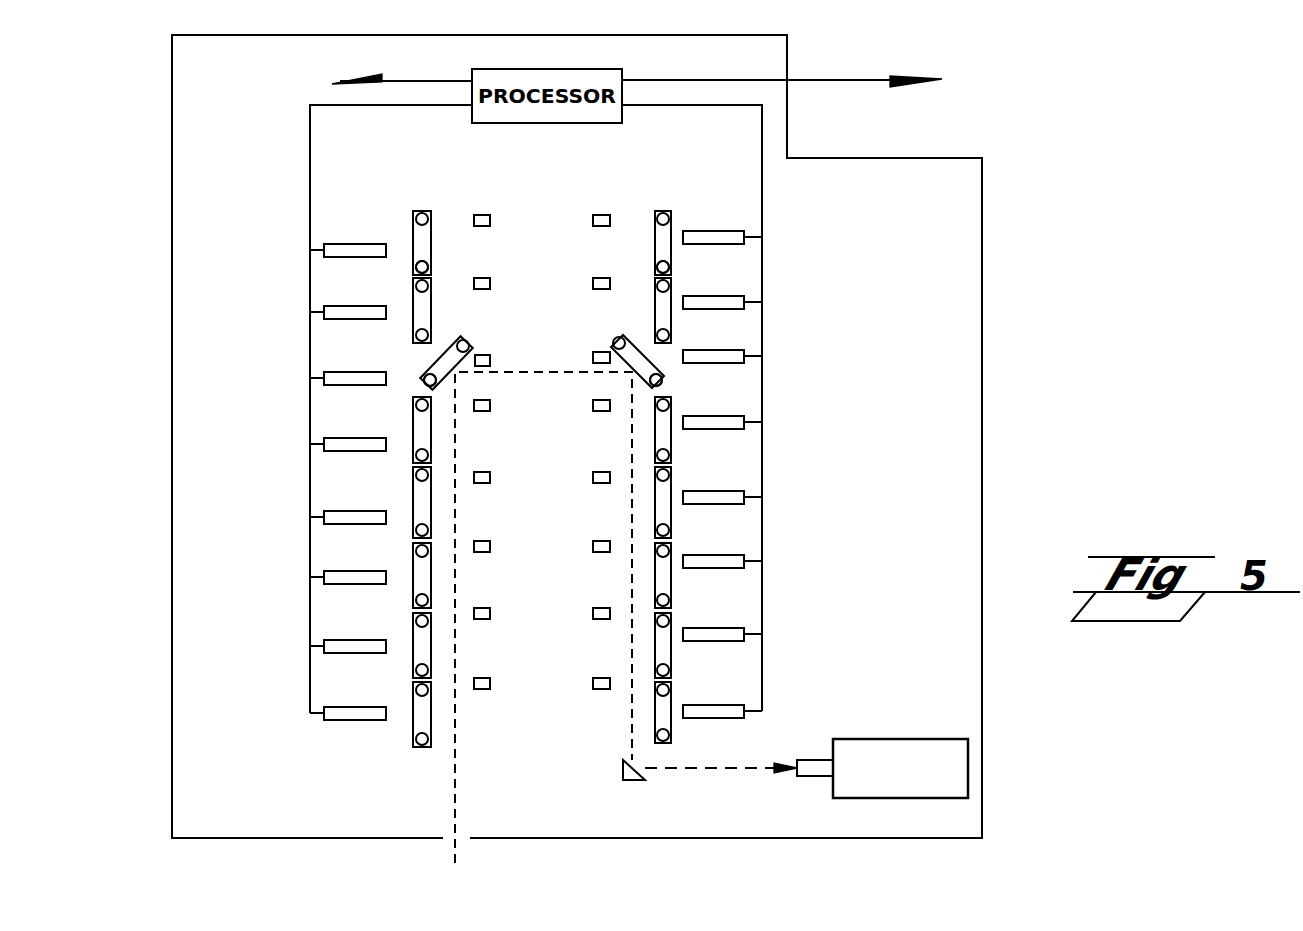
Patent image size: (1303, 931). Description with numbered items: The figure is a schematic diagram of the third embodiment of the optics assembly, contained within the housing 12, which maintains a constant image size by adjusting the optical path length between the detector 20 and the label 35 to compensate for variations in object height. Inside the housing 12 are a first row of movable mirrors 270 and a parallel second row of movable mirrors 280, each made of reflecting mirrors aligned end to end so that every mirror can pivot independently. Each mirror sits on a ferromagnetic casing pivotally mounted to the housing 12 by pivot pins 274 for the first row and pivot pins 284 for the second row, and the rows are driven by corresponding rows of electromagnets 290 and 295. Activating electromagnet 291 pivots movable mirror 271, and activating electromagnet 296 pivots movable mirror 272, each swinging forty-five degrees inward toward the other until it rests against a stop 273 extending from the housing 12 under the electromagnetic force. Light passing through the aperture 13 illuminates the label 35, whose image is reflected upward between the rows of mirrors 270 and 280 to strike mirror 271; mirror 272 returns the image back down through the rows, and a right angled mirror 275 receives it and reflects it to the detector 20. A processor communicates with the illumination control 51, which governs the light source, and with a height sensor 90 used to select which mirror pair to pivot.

The housing 12 is at (981, 408).
The aperture 13 is at (447, 835).
The detector 20 is at (882, 768).
The label 35 is at (653, 815).
The illumination control 51 is at (347, 69).
The height sensor 90 is at (853, 79).
The first row of movable mirrors 270 is at (404, 183).
The movable mirror 271 is at (440, 352).
The movable mirror 272 is at (628, 338).
The stops 273 is at (598, 350).
The pivot pins 274 is at (416, 266).
The right angled mirror 275 is at (636, 782).
The second row of movable mirrors 280 is at (646, 187).
The pivot pins 284 is at (666, 262).
The row of electromagnets 290 is at (301, 455).
The electromagnet 291 is at (340, 372).
The row of electromagnets 295 is at (773, 450).
The electromagnet 296 is at (735, 350).